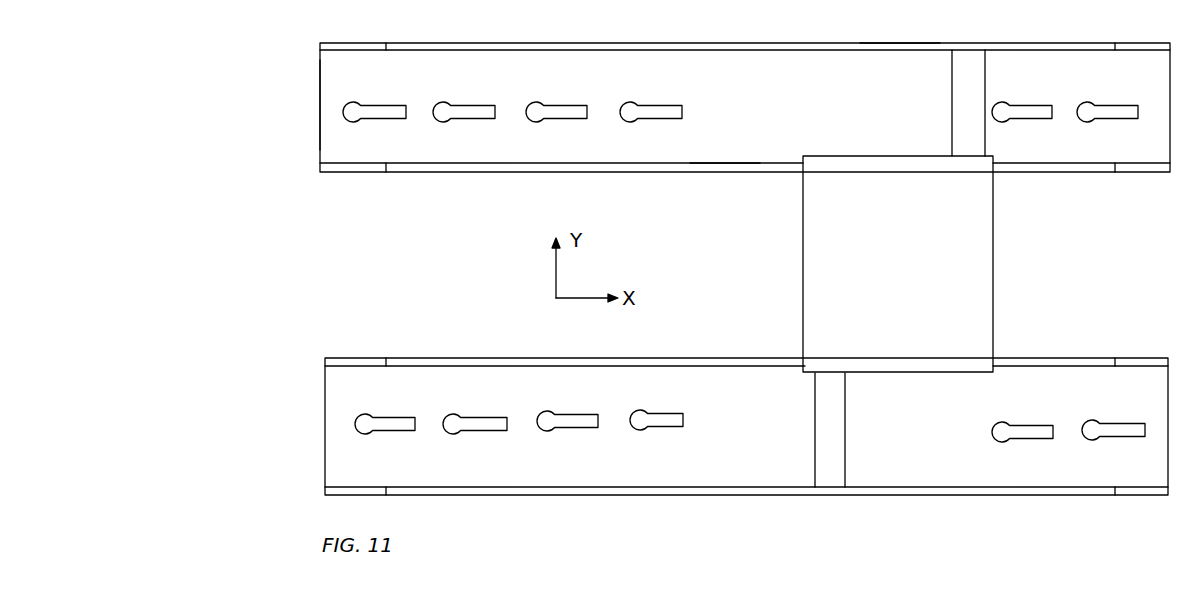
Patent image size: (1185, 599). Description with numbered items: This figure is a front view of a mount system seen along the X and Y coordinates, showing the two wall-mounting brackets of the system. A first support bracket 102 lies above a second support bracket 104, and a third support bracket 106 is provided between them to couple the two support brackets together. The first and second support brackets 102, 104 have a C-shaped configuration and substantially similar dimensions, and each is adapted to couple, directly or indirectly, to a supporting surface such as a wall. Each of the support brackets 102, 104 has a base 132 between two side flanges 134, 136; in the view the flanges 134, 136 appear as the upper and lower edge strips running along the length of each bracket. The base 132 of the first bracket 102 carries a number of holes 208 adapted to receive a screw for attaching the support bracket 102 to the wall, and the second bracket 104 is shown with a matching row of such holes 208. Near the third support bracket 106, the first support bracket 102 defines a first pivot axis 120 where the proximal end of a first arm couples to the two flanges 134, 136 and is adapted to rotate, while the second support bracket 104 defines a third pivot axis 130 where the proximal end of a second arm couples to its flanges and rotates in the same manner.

The first support bracket 102 is at (828, 119).
The second support bracket 104 is at (777, 438).
The third support bracket 106 is at (928, 284).
The first pivot axis 120 is at (967, 78).
The third pivot axis 130 is at (830, 465).
The base 132 is at (333, 84).
The side flange 134 is at (888, 43).
The side flange 136 is at (722, 167).
The holes 208 is at (383, 115).